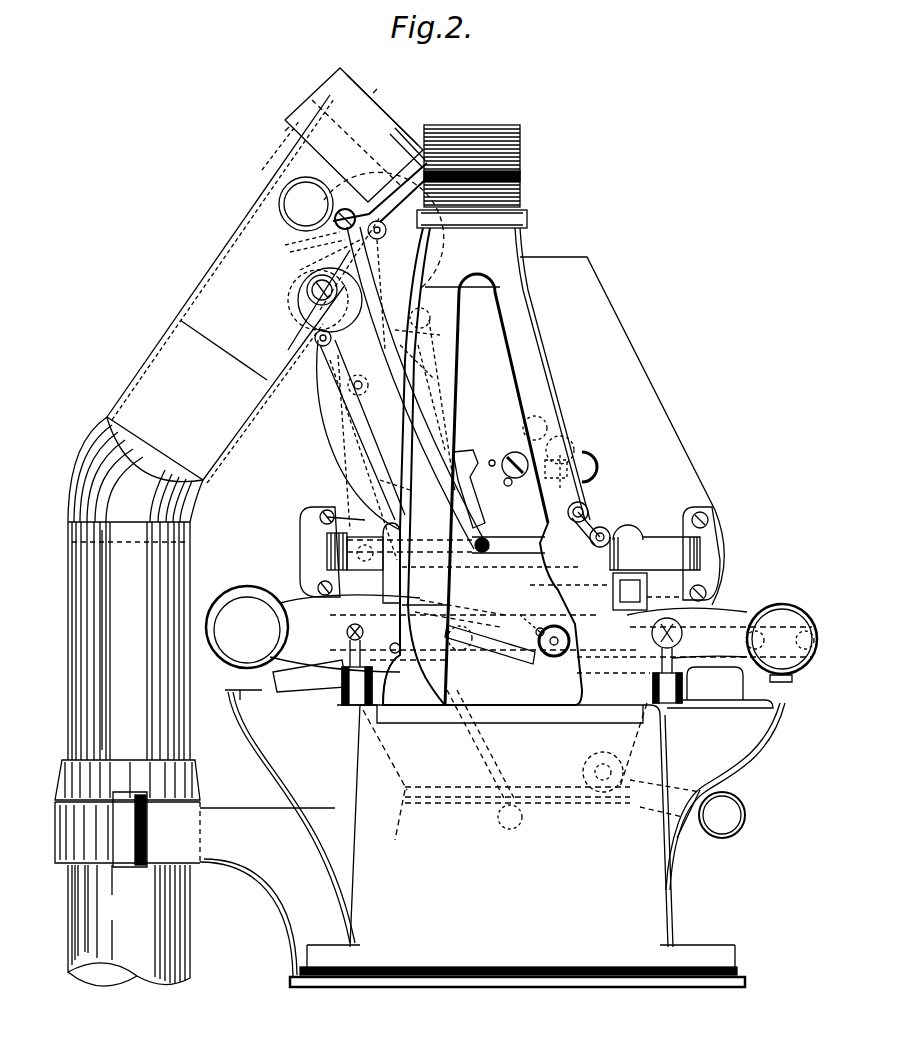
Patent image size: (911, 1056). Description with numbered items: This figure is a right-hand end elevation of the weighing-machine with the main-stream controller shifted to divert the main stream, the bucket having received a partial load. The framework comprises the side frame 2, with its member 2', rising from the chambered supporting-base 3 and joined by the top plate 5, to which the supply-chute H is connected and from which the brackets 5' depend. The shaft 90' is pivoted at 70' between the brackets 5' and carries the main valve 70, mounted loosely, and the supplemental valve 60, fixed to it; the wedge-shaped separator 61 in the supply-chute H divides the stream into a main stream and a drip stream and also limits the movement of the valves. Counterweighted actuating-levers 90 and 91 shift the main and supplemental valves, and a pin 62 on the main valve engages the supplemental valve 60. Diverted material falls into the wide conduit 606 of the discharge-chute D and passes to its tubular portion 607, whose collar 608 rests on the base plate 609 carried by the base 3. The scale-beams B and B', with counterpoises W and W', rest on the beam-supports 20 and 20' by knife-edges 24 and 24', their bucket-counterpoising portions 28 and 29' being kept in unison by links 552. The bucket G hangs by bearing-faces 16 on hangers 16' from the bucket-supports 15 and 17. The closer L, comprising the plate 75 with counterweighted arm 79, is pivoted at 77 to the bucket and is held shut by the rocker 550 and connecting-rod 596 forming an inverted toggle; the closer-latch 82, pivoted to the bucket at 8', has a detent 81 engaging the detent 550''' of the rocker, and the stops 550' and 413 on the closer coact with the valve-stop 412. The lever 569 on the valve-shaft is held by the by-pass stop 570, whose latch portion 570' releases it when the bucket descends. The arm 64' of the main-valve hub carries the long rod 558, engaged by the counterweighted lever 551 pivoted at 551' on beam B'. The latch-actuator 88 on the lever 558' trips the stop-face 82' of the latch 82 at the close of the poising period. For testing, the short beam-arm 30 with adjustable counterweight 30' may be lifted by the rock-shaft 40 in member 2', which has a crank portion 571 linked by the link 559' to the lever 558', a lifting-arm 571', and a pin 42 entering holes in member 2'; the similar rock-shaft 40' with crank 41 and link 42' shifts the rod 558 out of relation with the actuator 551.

The discharge-chute D is at (68, 568).
The pipe or tubular portion 607 is at (90, 628).
The annular flange or collar 608 is at (195, 778).
The base plate or frame 609 is at (247, 818).
The conduit 606 is at (258, 218).
The counterweighted actuating-lever 91 is at (285, 180).
The supply-chute H is at (332, 95).
The separator 61 is at (355, 130).
The arms or brackets 5' is at (380, 249).
The top plate or beam 5 is at (485, 177).
The member of side frame 2' is at (486, 466).
The supplemental valve or supplemental-stream controller 60 is at (455, 265).
The side frame or upright 2 is at (418, 388).
The bucket G is at (660, 430).
The pin 62 is at (320, 235).
The shaft 90' is at (345, 207).
The main valve or main-stream controller 70 is at (303, 247).
The pivot 70' is at (326, 256).
The valve-stop 412 is at (306, 292).
The counterweighted actuating-lever 90 is at (341, 385).
The laterally-projecting arm 64' is at (366, 263).
The stop 550' is at (453, 319).
The stop 413 is at (440, 335).
The rod or lever 558' is at (457, 406).
The bucket-discharge stop or rocker 550 is at (339, 435).
The connecting-rod 596 is at (345, 432).
The stop arm or lever 569 is at (355, 460).
The latch portion 570' is at (319, 499).
The detent or stop 81 is at (382, 494).
The bearing-faces 16 is at (350, 555).
The by-pass stop 570 is at (310, 537).
The detent 550''' is at (409, 547).
The link 559' is at (508, 553).
The lifting-arm 571' is at (506, 577).
The latch-actuator 88 is at (468, 451).
The closer-latch 82 is at (506, 450).
The stop-face 82' is at (482, 483).
The latch pivot 8' is at (535, 418).
The link 42' is at (574, 432).
The crank portion 41 is at (580, 450).
The rock-shaft 40' is at (601, 460).
The pin 42 is at (594, 512).
The rock-shaft 40 is at (611, 529).
The hangers 16' is at (686, 554).
The crank or link portion 571 is at (655, 567).
The scale-beam B is at (455, 616).
The counterpoise W is at (247, 613).
The scale-beam B' is at (719, 618).
The counterpoise W' is at (781, 651).
The pivots or knife-edges 24 is at (337, 644).
The bucket-supports 15 is at (392, 644).
The pivots or knife-edges 24' is at (692, 641).
The beam-support or V-shaped bearing 20' is at (641, 689).
The counterweighted lever 551 is at (310, 676).
The bucket-counterpoising portions 28 is at (245, 670).
The beam-support or V-shaped bearing 20 is at (414, 684).
The links 552 is at (470, 645).
The beam-arm 30 is at (569, 628).
The adjustable counterweight 30' is at (535, 611).
The actuating rod or arm 558 is at (453, 606).
The pivot 551' is at (481, 730).
The bucket-supports 17 is at (625, 648).
The bucket-counterpoising portion 29' is at (720, 684).
The chambered supporting-base 3 is at (357, 898).
The bucket-closer L is at (565, 805).
The pivot 77 is at (598, 772).
The closer plate 75 is at (478, 805).
The counterweighted arm 79 is at (652, 800).